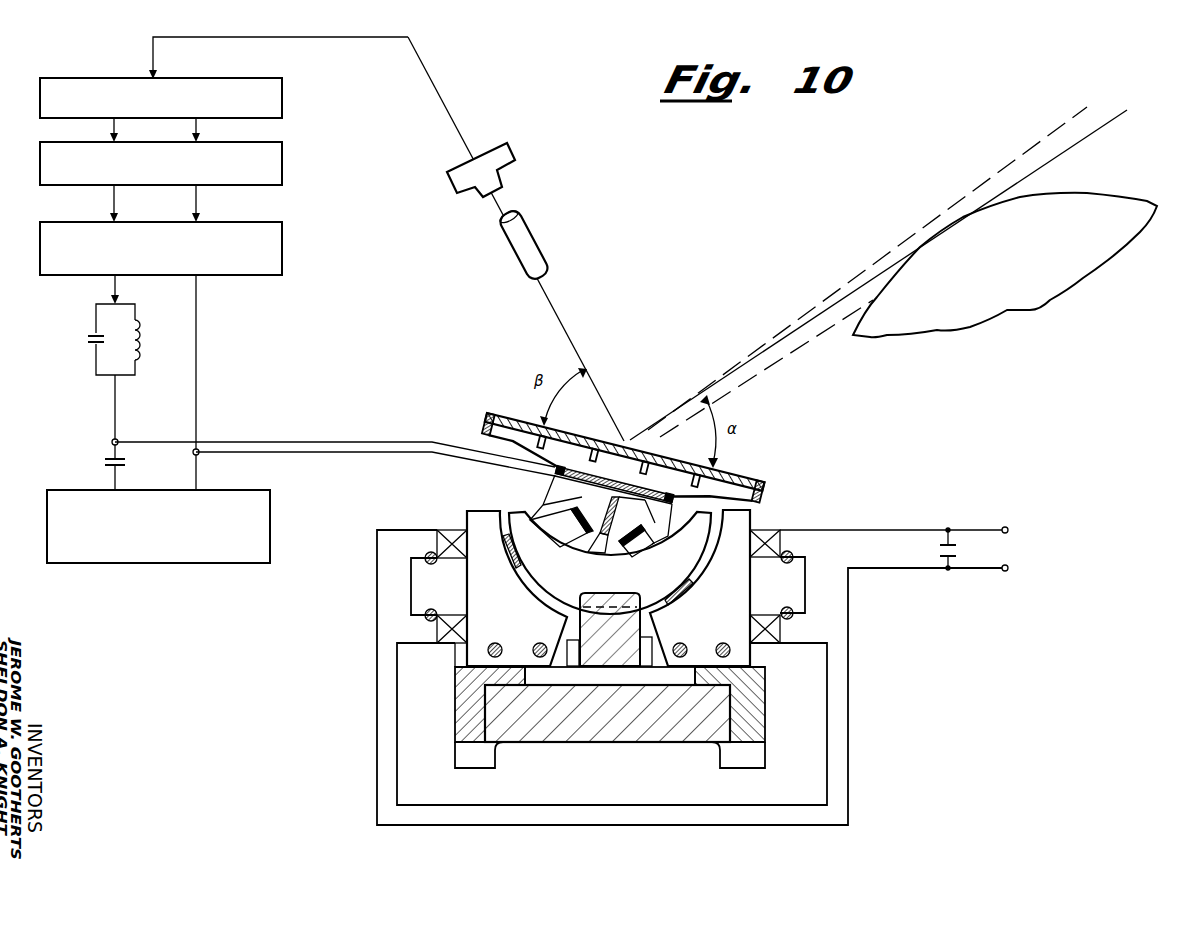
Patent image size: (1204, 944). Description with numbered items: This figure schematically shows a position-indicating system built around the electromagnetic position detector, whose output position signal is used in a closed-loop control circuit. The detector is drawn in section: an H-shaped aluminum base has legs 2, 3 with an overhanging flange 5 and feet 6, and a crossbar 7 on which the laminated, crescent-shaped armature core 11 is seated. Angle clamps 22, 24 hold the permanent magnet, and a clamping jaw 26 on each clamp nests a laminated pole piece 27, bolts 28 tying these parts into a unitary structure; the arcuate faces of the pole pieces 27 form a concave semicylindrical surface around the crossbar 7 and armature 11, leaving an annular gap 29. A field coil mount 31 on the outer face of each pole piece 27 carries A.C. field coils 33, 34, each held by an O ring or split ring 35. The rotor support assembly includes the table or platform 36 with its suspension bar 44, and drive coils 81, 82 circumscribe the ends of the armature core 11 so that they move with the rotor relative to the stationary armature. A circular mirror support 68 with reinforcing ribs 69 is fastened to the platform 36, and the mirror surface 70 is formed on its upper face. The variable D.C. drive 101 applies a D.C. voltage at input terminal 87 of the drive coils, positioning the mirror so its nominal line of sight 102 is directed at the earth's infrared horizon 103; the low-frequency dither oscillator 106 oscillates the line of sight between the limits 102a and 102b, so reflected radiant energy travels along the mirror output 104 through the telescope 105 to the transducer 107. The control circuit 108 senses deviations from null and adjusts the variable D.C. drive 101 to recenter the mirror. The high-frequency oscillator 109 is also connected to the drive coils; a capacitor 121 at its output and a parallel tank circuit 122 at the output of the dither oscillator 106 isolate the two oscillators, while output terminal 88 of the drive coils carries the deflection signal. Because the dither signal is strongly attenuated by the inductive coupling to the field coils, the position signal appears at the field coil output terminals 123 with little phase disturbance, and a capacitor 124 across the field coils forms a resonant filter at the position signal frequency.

The control circuit 108 is at (284, 98).
The variable D.C. drive 101 is at (284, 173).
The low-frequency dither oscillator 106 is at (284, 254).
The high-frequency oscillator 109 is at (165, 563).
The parallel tank circuit 122 is at (86, 338).
The capacitor 121 is at (108, 461).
The input terminal 87 is at (111, 442).
The output terminal 88 is at (199, 455).
The transducer 107 is at (512, 147).
The telescope 105 is at (540, 242).
The mirror output 104 is at (600, 320).
The mirror surface 70 is at (504, 393).
The reinforcing ribs 69 is at (690, 482).
The mirror support 68 is at (766, 492).
The table or platform 36 is at (615, 459).
The drive coil 81 is at (572, 508).
The drive coil 82 is at (650, 527).
The suspension bar 44 is at (610, 510).
The armature core 11 is at (584, 569).
The crossbar 7 is at (614, 592).
The pole piece 27 is at (512, 613).
The annular gap 29 is at (499, 512).
The A.C. field coil 34 is at (455, 530).
The A.C. field coil 33 is at (768, 530).
The O ring or split ring 35 is at (428, 552).
The field coil mount 31 is at (413, 590).
The bolts 28 is at (724, 643).
The overhanging flange 5 is at (573, 642).
The clamping jaw 26 is at (648, 668).
The leg 3 is at (618, 684).
The leg 2 is at (648, 740).
The angle clamp 24 is at (458, 707).
The angle clamp 22 is at (766, 700).
The feet 6 is at (462, 756).
The capacitor 124 is at (944, 552).
The output terminals 123 is at (1005, 533).
The nominal line of sight 102 is at (784, 336).
The line-of-sight limit 102a is at (842, 282).
The line-of-sight limit 102b is at (755, 376).
The infrared horizon 103 is at (1090, 195).